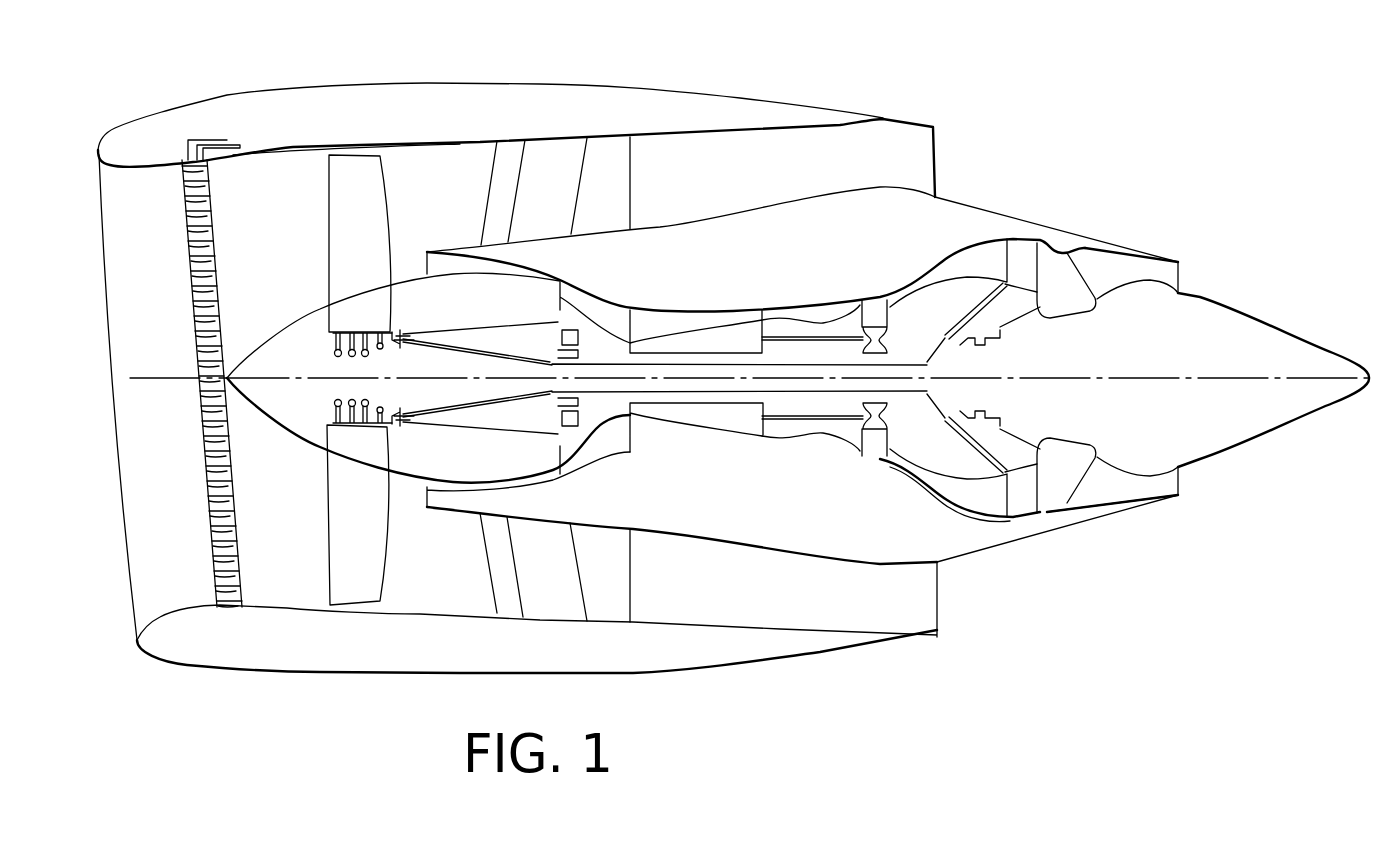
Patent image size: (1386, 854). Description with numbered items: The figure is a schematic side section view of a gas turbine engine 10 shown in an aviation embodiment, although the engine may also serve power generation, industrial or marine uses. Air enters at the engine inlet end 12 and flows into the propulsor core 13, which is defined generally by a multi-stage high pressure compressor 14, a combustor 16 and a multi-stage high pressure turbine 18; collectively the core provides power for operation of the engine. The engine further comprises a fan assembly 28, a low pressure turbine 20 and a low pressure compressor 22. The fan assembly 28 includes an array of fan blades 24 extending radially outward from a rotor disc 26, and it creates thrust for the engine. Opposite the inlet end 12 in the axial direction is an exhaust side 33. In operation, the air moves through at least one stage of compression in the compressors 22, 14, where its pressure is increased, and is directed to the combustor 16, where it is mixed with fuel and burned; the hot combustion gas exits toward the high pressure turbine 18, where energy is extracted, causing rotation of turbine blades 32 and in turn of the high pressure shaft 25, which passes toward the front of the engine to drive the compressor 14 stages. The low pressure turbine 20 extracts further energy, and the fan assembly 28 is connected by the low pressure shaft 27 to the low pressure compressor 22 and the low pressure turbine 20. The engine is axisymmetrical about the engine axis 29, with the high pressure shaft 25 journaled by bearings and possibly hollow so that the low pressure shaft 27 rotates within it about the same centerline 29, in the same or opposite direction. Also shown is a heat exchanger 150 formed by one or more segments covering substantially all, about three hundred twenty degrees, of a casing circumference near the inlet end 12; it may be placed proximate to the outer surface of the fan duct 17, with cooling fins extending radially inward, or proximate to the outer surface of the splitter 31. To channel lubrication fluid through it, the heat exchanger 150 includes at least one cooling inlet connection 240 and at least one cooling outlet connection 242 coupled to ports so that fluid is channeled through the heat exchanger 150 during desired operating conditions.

The gas turbine engine 10 is at (860, 70).
The engine inlet end 12 is at (104, 180).
The propulsor core 13 is at (735, 243).
The high pressure compressor 14 is at (668, 316).
The combustor 16 is at (822, 303).
The fan duct 17 is at (233, 158).
The high pressure turbine 18 is at (888, 471).
The low pressure turbine 20 is at (945, 257).
The low pressure compressor 22 is at (636, 303).
The fan blades 24 is at (343, 243).
The high pressure shaft 25 is at (782, 418).
The rotor disc 26 is at (323, 449).
The low pressure shaft 27 is at (977, 445).
The fan assembly 28 is at (340, 525).
The engine axis 29 is at (1180, 377).
The splitter 31 is at (440, 247).
The turbine blades 32 is at (893, 345).
The exhaust side 33 is at (985, 152).
The heat exchanger 150 is at (148, 363).
The cooling inlet connection 240 is at (242, 145).
The cooling outlet connection 242 is at (197, 140).